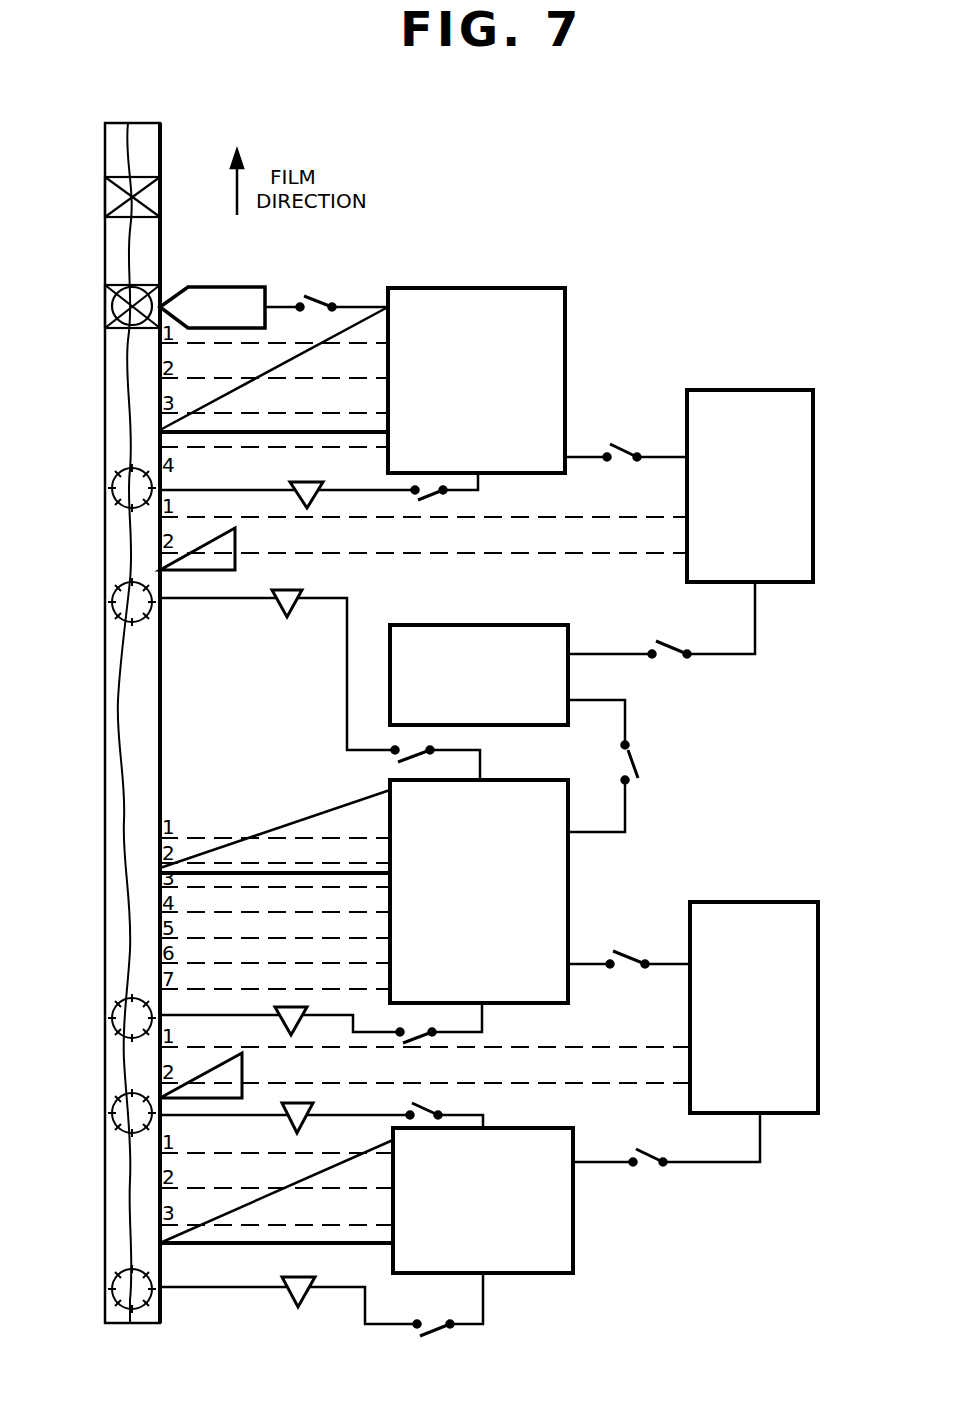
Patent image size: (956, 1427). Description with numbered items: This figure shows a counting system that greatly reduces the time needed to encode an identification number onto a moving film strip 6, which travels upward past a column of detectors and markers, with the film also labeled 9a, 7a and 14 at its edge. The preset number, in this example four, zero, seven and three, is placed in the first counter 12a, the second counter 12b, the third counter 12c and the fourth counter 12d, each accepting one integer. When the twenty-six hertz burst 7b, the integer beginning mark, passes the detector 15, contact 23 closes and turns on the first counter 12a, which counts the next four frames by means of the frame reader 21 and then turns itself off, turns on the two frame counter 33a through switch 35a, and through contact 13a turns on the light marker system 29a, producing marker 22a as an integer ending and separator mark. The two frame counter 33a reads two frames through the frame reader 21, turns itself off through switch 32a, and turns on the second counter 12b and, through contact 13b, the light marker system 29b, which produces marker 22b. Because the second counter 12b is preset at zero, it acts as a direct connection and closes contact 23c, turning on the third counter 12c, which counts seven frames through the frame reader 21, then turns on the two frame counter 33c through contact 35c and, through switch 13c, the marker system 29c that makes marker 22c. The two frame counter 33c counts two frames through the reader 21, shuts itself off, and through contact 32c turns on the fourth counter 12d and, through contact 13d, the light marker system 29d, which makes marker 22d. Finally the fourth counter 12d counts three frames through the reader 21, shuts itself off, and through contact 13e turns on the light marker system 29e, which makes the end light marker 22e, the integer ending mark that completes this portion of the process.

The film strip 6 is at (126, 262).
The film frame 9a is at (120, 147).
The frame marker 7a is at (108, 197).
The 26 Hz burst (integer beginning mark) 7b is at (106, 315).
The detector 15 is at (254, 288).
The contact 23 is at (306, 296).
The frame reader 21 is at (364, 420).
The counter #1 12a is at (500, 292).
The counter #2 12b is at (483, 628).
The counter #3 12c is at (570, 880).
The counter #4 12d is at (574, 1238).
The two frame counter 33a is at (734, 392).
The two frame counter 33c is at (748, 910).
The switch 35a is at (611, 444).
The contact 35c is at (613, 950).
The switch 32a is at (658, 641).
The contact 32c is at (645, 1168).
The contact 23c is at (633, 766).
The contact 13a is at (430, 502).
The contact 13b is at (394, 762).
The switch 13c is at (412, 1030).
The contact 13d is at (420, 1106).
The contact 13e is at (418, 1336).
The light marker system 29a is at (306, 480).
The light marker system 29b is at (280, 606).
The marker system 29c is at (286, 1020).
The light marker system 29d is at (292, 1120).
The light marker system 29e is at (298, 1278).
The marker 22a is at (114, 490).
The marker 22b is at (114, 604).
The marker 22c is at (114, 1020).
The marker 22d is at (114, 1114).
The end light marker 22e is at (114, 1290).
The film direction indicator 14 is at (166, 734).